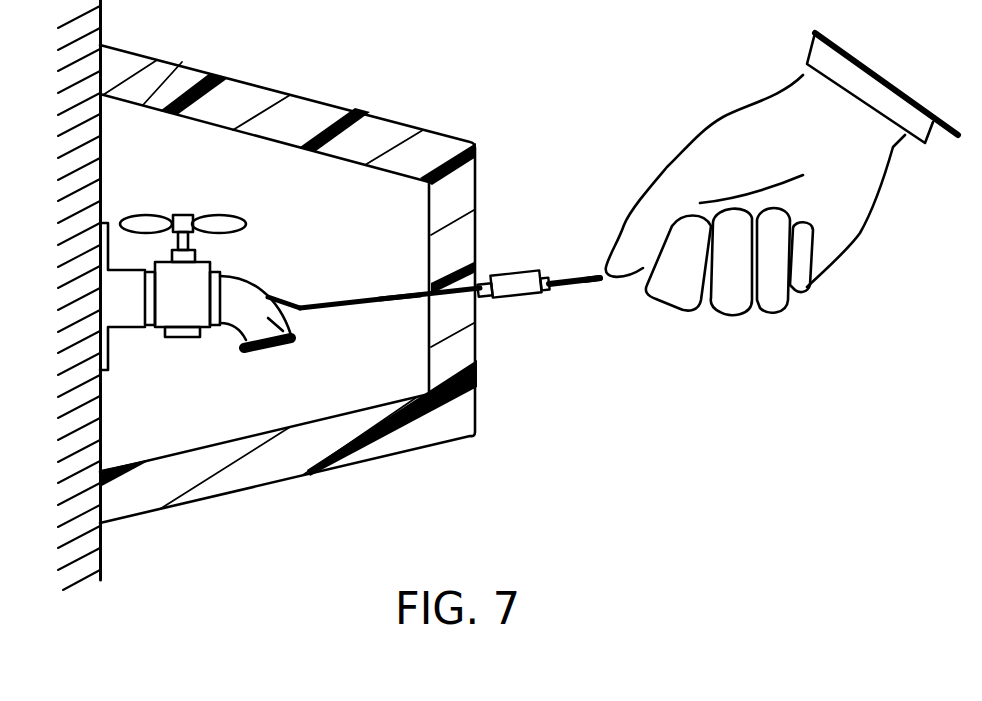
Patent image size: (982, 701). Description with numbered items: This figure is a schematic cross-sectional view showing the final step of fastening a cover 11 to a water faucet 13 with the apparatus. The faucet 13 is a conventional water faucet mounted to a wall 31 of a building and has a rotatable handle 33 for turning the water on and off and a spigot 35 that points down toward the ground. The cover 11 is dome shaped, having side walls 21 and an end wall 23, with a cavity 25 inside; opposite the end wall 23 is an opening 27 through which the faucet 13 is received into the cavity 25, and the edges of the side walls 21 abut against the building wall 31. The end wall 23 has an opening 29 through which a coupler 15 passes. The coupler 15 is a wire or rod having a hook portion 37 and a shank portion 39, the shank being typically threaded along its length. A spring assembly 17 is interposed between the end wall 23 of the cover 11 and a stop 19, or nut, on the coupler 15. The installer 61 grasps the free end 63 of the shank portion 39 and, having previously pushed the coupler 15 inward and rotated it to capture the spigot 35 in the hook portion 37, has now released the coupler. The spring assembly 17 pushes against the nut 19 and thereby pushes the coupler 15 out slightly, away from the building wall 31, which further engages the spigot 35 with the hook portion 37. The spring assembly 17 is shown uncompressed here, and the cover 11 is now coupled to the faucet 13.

The cover 11 is at (310, 118).
The water faucet 13 is at (178, 338).
The coupler 15 is at (383, 299).
The spring assembly 17 is at (565, 240).
The stop 19 is at (548, 290).
The side walls 21 is at (255, 105).
The end wall 23 is at (460, 200).
The cavity 25 is at (335, 388).
The opening 27 is at (118, 128).
The opening 29 is at (477, 297).
The wall 31 is at (103, 535).
The rotatable handle 33 is at (210, 227).
The spigot 35 is at (272, 318).
The hook portion 37 is at (287, 298).
The shank portion 39 is at (390, 296).
The installer 61 is at (700, 128).
The free end 63 is at (588, 272).